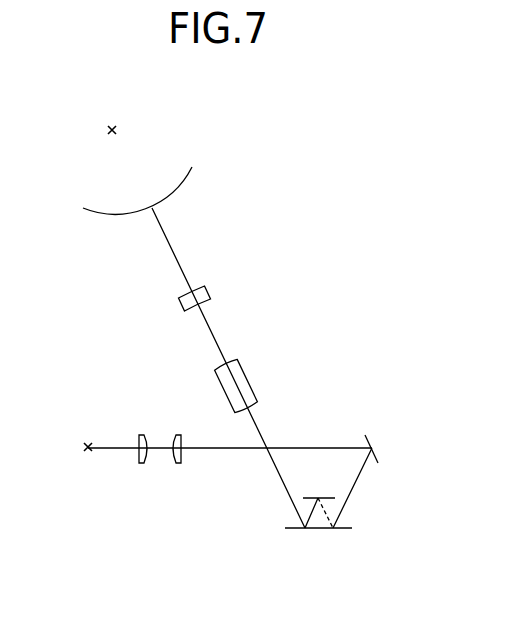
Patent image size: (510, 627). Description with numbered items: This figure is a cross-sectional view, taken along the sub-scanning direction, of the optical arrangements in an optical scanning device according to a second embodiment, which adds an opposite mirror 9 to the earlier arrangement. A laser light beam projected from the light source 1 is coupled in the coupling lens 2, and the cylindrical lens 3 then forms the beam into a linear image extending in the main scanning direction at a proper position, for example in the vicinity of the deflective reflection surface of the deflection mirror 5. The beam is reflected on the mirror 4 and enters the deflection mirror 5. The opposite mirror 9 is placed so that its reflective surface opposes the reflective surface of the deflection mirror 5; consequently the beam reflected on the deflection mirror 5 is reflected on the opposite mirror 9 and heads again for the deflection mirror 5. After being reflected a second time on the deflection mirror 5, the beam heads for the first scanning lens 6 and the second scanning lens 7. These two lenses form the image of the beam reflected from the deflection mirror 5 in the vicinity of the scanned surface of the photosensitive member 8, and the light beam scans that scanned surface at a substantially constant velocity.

The light source 1 is at (90, 453).
The coupling lens 2 is at (143, 465).
The cylindrical lens 3 is at (175, 465).
The mirror 4 is at (378, 455).
The deflection mirror 5 is at (325, 530).
The first scanning lens 6 is at (247, 373).
The second scanning lens 7 is at (212, 291).
The photosensitive member 8 is at (182, 187).
The opposite mirror 9 is at (337, 494).